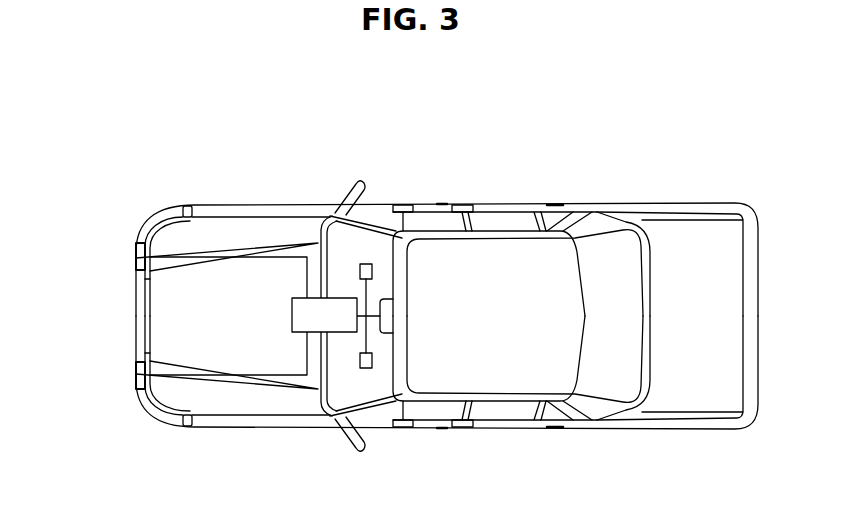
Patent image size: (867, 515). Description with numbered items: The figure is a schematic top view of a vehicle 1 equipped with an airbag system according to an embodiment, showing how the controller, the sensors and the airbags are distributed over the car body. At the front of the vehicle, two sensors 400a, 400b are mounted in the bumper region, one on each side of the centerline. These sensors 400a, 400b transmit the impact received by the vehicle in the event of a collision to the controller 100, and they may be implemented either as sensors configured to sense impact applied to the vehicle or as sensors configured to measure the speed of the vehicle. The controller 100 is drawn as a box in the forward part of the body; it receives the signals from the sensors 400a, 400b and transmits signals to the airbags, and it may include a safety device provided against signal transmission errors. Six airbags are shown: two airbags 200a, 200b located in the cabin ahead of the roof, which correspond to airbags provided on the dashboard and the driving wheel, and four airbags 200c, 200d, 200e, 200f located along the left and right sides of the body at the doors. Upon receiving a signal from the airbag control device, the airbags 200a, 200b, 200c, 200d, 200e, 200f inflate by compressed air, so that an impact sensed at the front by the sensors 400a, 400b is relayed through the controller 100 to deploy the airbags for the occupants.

The vehicle 1 is at (174, 128).
The controller 100 is at (336, 315).
The airbag 200a is at (373, 268).
The airbag 200b is at (373, 358).
The airbag 200c is at (403, 204).
The airbag 200d is at (464, 204).
The airbag 200e is at (403, 428).
The airbag 200f is at (464, 428).
The sensor 400a is at (136, 262).
The sensor 400b is at (136, 376).